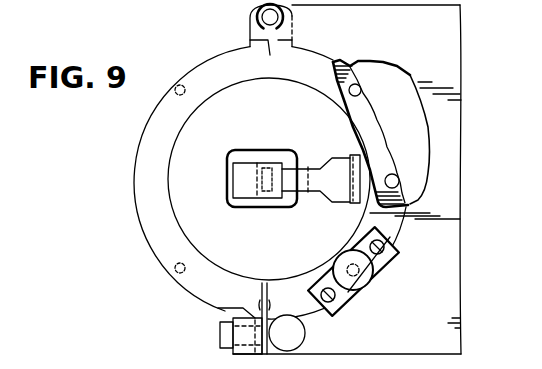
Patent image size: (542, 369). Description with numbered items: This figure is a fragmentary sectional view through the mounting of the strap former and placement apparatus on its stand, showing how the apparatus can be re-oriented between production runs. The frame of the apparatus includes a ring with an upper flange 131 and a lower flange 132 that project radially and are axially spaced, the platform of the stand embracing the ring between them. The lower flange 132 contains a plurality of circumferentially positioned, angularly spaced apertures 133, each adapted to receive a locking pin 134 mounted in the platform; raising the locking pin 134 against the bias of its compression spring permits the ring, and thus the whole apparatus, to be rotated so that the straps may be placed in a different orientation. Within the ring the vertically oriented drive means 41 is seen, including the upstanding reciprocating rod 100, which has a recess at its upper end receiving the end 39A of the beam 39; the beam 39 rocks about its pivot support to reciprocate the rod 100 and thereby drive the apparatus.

The beam 39 is at (317, 186).
The end of the beam 39A is at (270, 172).
The drive means 41 is at (267, 212).
The reciprocating rod 100 is at (238, 178).
The upper flange 131 is at (182, 207).
The lower flange 132 is at (377, 110).
The apertures 133 is at (355, 97).
The locking pin 134 is at (372, 270).